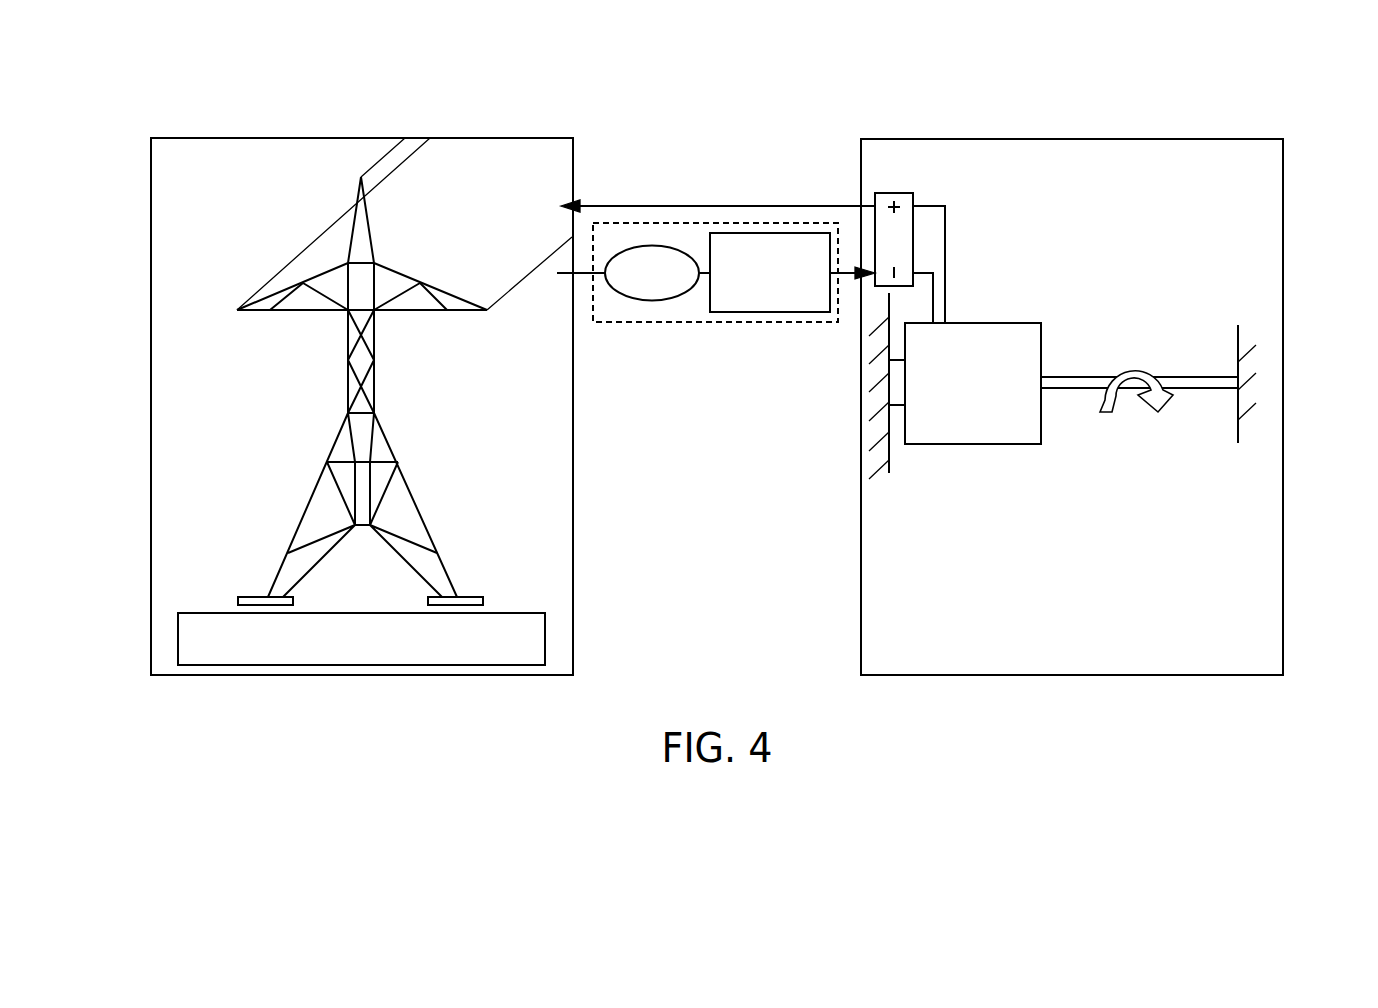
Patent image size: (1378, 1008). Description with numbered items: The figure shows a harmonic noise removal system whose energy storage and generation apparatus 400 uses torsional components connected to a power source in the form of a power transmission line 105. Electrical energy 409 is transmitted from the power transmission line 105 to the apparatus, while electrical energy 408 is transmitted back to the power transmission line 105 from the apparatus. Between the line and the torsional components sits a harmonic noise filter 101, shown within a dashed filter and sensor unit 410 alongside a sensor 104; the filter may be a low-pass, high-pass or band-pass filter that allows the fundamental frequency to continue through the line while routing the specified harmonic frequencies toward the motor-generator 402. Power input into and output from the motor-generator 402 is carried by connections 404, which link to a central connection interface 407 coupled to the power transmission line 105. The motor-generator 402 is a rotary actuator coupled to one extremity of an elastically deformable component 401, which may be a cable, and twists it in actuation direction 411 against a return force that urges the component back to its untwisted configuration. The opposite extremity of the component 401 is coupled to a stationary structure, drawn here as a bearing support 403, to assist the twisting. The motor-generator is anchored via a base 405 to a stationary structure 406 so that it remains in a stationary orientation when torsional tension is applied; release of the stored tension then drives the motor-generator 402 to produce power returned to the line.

The energy storage and generation apparatus 400 is at (1205, 56).
The power transmission line 105 is at (530, 138).
The electrical energy 408 is at (707, 206).
The electrical energy 409 is at (579, 275).
The controller 410 is at (725, 322).
The sensor 104 is at (652, 300).
The harmonic noise filter 101 is at (792, 312).
The central connection interface 407 is at (883, 191).
The connections 404 is at (928, 205).
The motor-generator 402 is at (1022, 322).
The base 405 is at (887, 393).
The stationary structure 406 is at (883, 462).
The elastically deformable component 401 is at (1183, 375).
The actuation direction 411 is at (1125, 362).
The bearing support 403 is at (1240, 400).